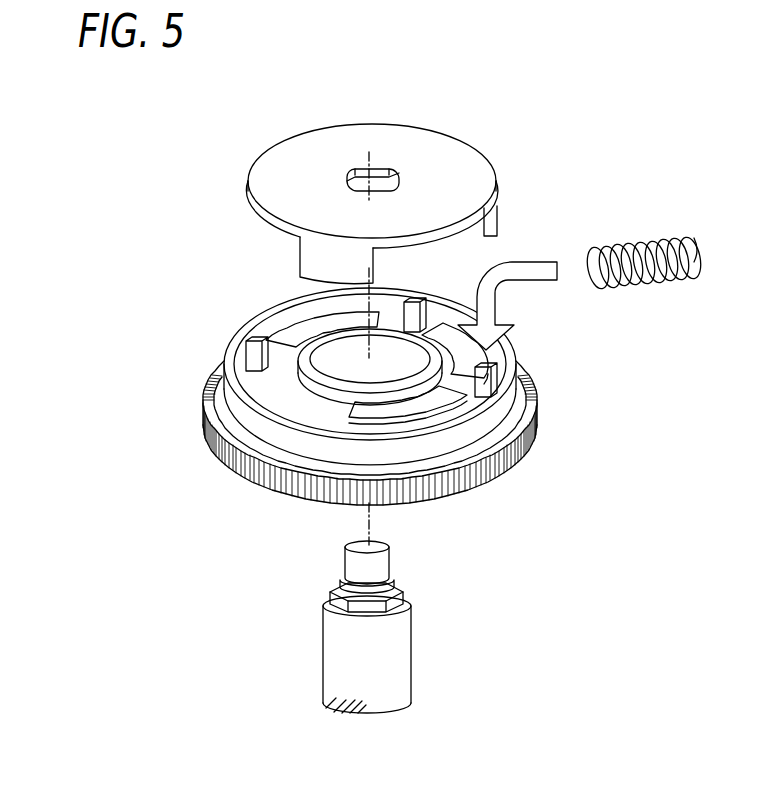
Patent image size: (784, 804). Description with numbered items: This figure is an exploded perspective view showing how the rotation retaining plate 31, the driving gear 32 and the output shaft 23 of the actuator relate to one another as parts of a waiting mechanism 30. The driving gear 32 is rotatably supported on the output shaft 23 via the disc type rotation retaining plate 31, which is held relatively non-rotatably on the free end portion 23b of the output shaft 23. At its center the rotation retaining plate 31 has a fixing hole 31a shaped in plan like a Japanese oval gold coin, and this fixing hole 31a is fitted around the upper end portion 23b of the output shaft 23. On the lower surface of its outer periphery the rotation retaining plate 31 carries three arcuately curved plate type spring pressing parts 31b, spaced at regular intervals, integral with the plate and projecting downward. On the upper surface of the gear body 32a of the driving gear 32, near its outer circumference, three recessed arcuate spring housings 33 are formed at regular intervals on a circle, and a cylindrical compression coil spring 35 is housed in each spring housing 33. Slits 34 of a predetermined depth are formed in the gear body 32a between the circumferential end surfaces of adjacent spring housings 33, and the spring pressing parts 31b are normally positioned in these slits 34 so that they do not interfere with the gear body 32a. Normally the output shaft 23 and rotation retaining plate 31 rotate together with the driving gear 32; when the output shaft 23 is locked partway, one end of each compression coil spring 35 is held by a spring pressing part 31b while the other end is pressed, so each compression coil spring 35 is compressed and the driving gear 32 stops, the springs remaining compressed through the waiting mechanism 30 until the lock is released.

The waiting mechanism 30 is at (369, 104).
The rotation retaining plate 31 is at (474, 137).
The fixing hole 31a is at (392, 174).
The spring pressing parts 31b is at (312, 257).
The driving gear 32 is at (545, 413).
The gear body 32a is at (270, 318).
The spring housings 33 is at (418, 312).
The slits 34 is at (290, 325).
The compression coil spring 35 is at (632, 288).
The output shaft 23 is at (420, 653).
The free end portion 23b is at (386, 602).